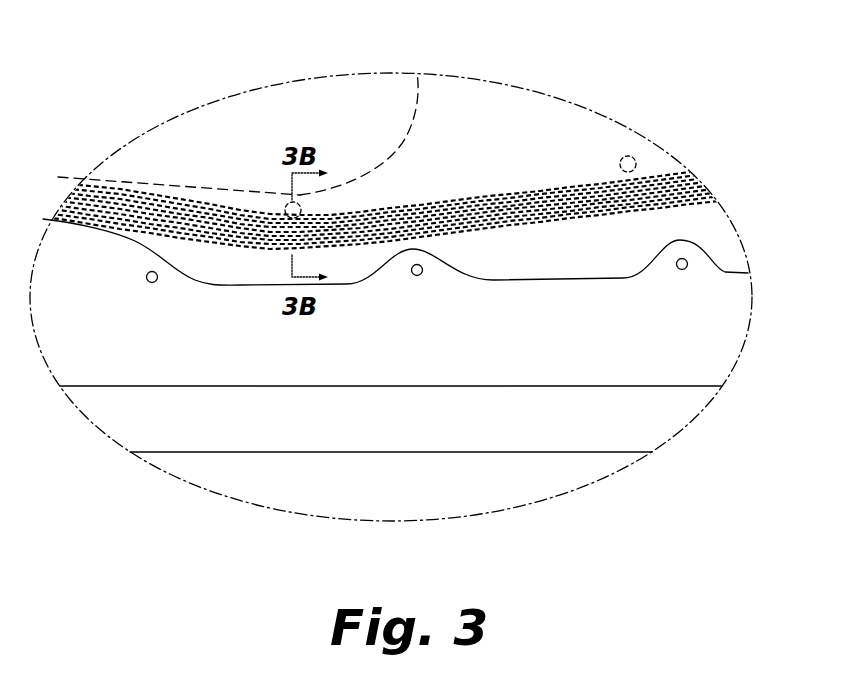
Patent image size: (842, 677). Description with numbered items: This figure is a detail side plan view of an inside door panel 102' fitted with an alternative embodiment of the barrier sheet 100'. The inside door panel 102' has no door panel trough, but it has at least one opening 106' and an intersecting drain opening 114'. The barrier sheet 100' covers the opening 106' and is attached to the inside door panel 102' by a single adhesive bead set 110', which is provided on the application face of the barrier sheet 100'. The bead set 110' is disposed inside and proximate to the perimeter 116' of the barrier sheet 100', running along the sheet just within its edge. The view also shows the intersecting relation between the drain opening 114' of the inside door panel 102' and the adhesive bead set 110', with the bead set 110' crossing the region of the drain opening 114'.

The barrier sheet 100' is at (391, 286).
The inside door panel 102' is at (391, 395).
The opening 106' is at (179, 118).
The bead set 110' is at (375, 173).
The drain opening 114' is at (351, 145).
The perimeter 116' is at (395, 286).